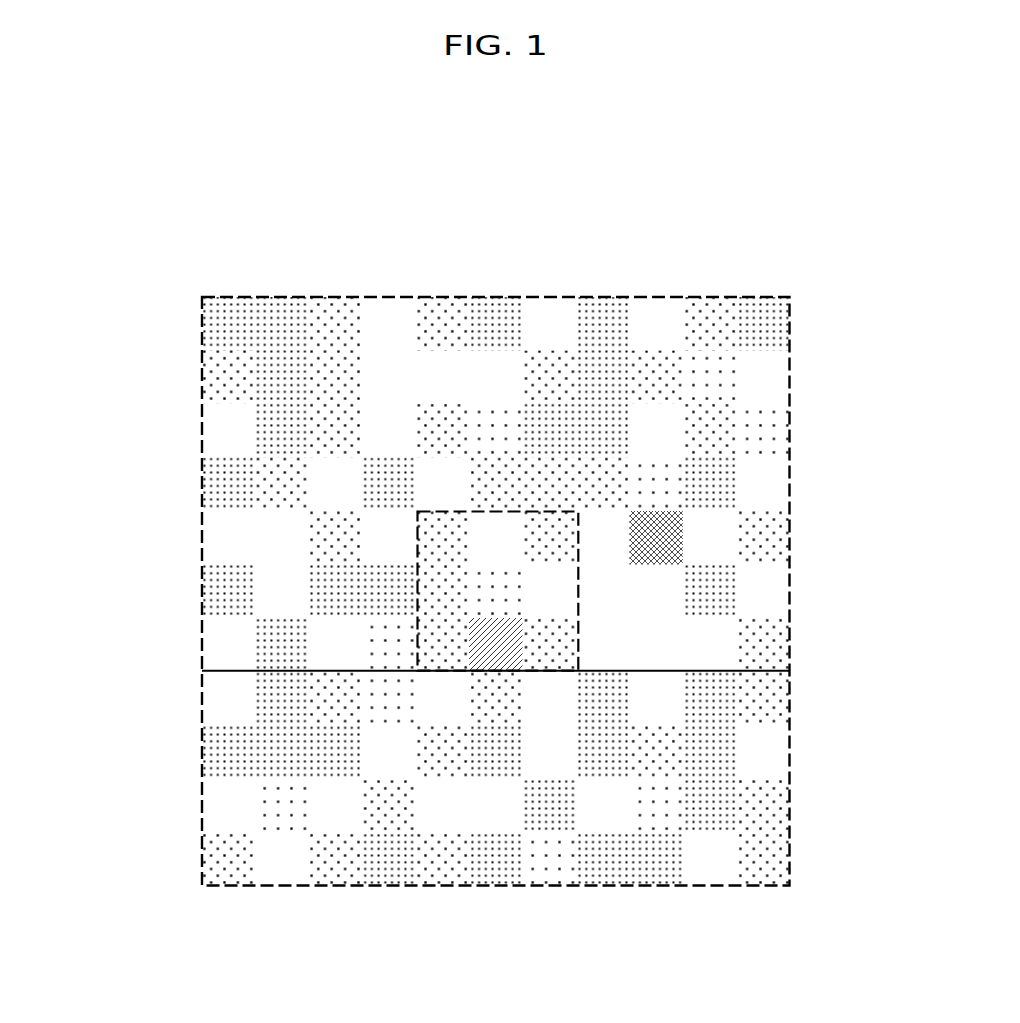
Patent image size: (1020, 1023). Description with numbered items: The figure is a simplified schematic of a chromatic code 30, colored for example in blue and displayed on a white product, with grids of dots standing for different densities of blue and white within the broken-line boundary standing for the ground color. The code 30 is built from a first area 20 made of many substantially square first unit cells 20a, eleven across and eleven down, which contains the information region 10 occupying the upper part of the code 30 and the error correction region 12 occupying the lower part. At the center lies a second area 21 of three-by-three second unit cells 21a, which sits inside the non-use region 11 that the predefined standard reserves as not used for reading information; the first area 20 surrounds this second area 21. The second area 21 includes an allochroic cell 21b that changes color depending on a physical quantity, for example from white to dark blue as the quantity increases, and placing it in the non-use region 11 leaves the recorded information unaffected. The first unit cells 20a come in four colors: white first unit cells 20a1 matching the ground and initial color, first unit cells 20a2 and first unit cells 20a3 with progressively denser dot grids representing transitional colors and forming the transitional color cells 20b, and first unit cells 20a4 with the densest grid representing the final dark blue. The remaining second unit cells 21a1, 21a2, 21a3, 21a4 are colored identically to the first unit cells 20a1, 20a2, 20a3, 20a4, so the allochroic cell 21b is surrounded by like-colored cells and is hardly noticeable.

The code 30 is at (617, 182).
The information region 10 is at (793, 420).
The first area 20 is at (473, 593).
The error correction region 12 is at (712, 890).
The non-use region 11 is at (578, 573).
The second area 21 is at (467, 725).
The first unit cell 20a is at (773, 548).
The transitional color cell 20b is at (608, 300).
The first unit cell colored with white 20a1 is at (231, 431).
The first unit cell with a grid of dots 20a2 is at (390, 372).
The first unit cell with a high-density grid of dots 20a3 is at (666, 358).
The first unit cell with a higher-density grid of dots 20a4 is at (283, 423).
The second unit cell 21a is at (555, 597).
The second unit cell colored the same as first unit cell 20a1 21a1 is at (444, 655).
The second unit cell colored the same as first unit cell 20a2 21a2 is at (497, 588).
The second unit cell colored the same as first unit cell 20a3 21a3 is at (432, 596).
The second unit cell colored the same as first unit cell 20a4 21a4 is at (553, 653).
The allochroic cell 21b is at (505, 653).